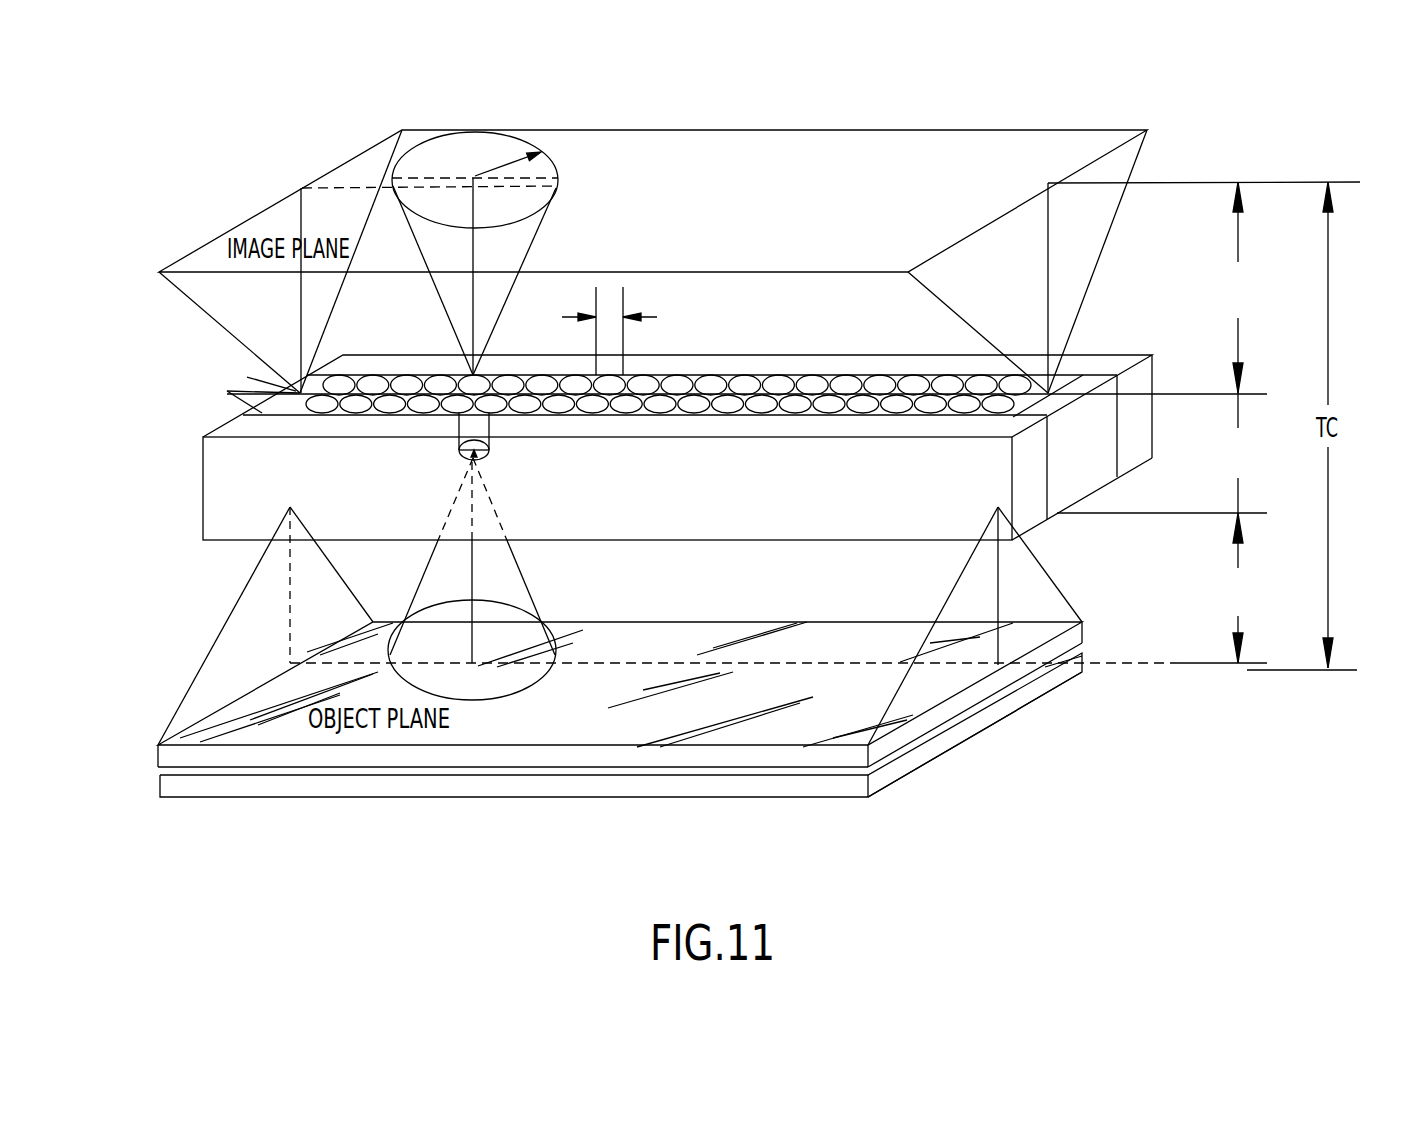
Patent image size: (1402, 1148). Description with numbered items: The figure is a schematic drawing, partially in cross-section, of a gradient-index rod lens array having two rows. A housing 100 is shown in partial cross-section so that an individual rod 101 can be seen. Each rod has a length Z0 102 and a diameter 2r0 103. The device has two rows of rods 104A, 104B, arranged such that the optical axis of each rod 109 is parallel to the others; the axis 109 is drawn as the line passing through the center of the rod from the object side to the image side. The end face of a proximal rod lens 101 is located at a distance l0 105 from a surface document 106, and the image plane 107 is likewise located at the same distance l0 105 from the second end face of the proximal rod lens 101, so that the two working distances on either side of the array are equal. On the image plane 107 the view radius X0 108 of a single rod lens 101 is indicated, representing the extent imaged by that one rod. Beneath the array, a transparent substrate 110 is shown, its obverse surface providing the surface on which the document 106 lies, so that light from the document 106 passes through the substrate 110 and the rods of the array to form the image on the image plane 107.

The housing 100 is at (203, 487).
The rod 101 is at (490, 445).
The length Z0 102 is at (1248, 443).
The diameter 2r0 103 is at (700, 300).
The first row of rods 104A is at (247, 377).
The second row of rods 104B is at (227, 391).
The distance l0 105 is at (1238, 243).
The document 106 is at (455, 785).
The image plane 107 is at (865, 227).
The view radius X0 108 is at (497, 135).
The optical axis 109 is at (470, 580).
The transparent substrate 110 is at (855, 722).